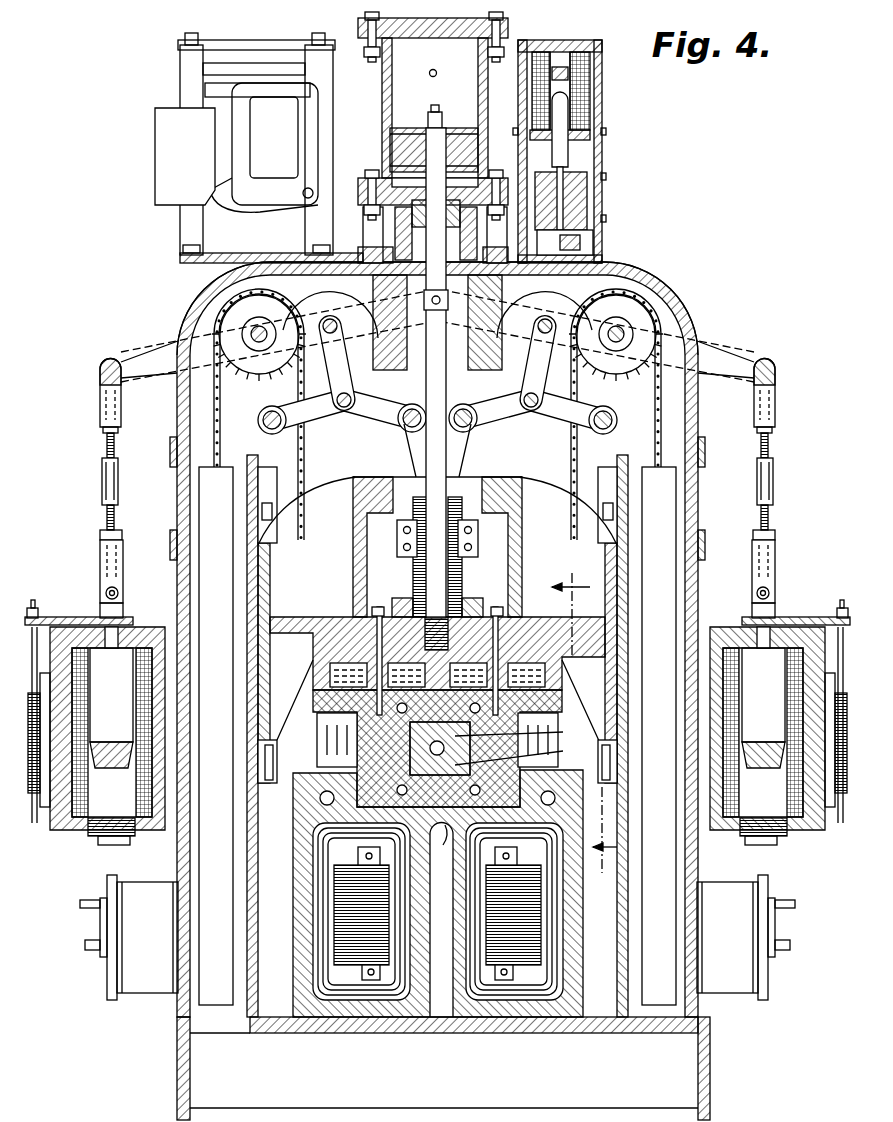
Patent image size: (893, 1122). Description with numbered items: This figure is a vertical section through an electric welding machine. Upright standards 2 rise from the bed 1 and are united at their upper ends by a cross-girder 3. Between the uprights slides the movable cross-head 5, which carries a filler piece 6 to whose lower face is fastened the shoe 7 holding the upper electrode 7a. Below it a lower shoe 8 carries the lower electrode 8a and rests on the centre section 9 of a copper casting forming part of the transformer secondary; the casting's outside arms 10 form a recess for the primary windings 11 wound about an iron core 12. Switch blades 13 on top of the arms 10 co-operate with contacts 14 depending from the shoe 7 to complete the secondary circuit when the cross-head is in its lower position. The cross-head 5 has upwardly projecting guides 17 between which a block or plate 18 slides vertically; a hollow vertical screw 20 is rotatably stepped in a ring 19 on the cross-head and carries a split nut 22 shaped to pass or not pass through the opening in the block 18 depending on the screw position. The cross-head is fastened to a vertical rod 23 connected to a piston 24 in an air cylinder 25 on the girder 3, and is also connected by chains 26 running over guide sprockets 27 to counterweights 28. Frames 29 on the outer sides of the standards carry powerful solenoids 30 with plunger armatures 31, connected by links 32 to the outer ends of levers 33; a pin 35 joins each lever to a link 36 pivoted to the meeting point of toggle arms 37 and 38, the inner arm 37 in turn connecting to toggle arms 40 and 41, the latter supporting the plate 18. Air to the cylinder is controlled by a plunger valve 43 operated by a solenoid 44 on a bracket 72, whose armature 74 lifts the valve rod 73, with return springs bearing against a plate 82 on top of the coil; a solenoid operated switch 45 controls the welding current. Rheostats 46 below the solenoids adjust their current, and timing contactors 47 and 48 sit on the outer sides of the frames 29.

The bed 1 is at (443, 1068).
The upright standards 2 is at (178, 504).
The cross-girder 3 is at (212, 293).
The movable cross-head 5 is at (308, 627).
The filler piece 6 is at (313, 663).
The shoe 7 is at (313, 697).
The upper electrode 7a is at (524, 731).
The lower shoe 8 is at (300, 748).
The lower electrode 8a is at (524, 752).
The centre section 9 is at (438, 850).
The outside arms 10 is at (297, 872).
The primary windings 11 is at (323, 907).
The iron core 12 is at (340, 938).
The switch blades 13 is at (323, 740).
The contacts 14 is at (323, 720).
The guides 17 is at (357, 490).
The block or plate 18 is at (375, 503).
The ring 19 is at (490, 600).
The hollow vertical screw 20 is at (413, 570).
The split nut 22 is at (397, 548).
The vertical rod 23 is at (426, 240).
The piston 24 is at (398, 152).
The air cylinder 25 is at (384, 92).
The chains 26 is at (213, 430).
The guide sprockets 27 is at (262, 385).
The counterweights 28 is at (437, 736).
The frames 29 is at (60, 640).
The solenoids 30 is at (88, 673).
The plunger armature 31 is at (437, 708).
The links 32 is at (120, 492).
The levers 33 is at (137, 353).
The pin 35 is at (337, 300).
The link 36 is at (350, 368).
The inner toggle arm 37 is at (363, 414).
The outer toggle arm 38 is at (318, 414).
The upper toggle arms 40 is at (414, 388).
The toggle arms 41 is at (412, 450).
The valve 43 is at (590, 195).
The solenoid 44 is at (590, 85).
The solenoid operated switch 45 is at (259, 148).
The rheostats 46 is at (437, 937).
The timing contactor 47 is at (28, 745).
The timing contactor 48 is at (845, 745).
The bracket 72 is at (601, 115).
The valve rod 73 is at (568, 236).
The armature 74 is at (567, 153).
The plate 82 is at (583, 39).